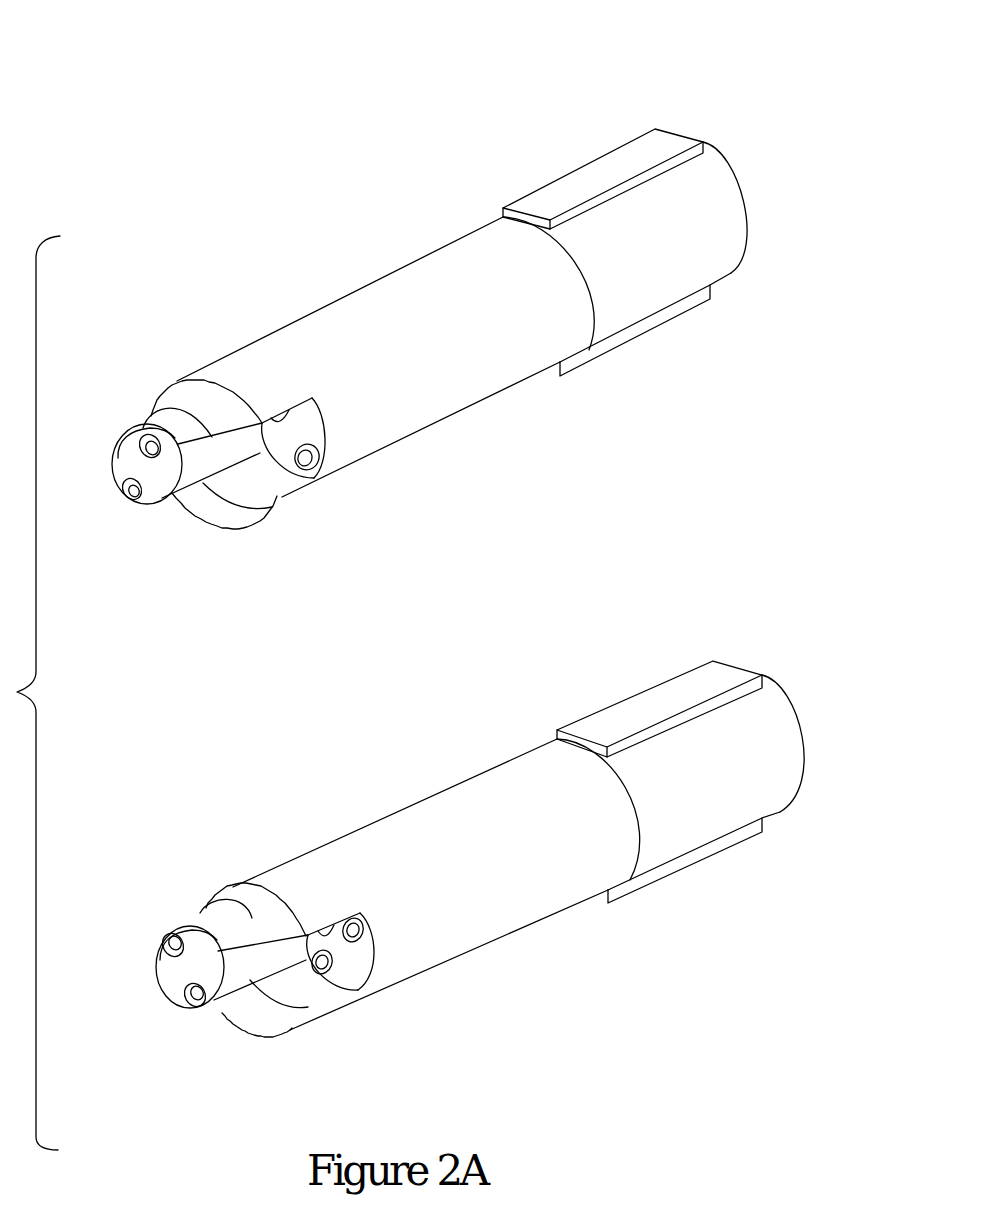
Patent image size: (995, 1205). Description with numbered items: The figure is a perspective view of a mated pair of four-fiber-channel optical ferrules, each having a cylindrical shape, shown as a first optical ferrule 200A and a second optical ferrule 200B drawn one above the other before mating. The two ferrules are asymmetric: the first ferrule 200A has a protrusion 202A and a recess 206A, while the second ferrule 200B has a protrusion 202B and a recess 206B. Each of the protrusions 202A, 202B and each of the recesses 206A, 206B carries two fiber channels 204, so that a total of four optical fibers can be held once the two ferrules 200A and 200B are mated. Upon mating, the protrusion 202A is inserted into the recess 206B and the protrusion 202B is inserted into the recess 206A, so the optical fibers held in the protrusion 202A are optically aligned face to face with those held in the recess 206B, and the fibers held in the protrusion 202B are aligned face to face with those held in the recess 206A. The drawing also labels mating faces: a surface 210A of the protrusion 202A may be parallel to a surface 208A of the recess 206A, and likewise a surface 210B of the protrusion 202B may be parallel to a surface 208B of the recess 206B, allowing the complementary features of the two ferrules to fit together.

The first optical ferrule 200A is at (678, 94).
The second optical ferrule 200B is at (671, 576).
The protrusion 202A is at (192, 484).
The protrusion 202B is at (207, 918).
The fiber channels 204 is at (147, 440).
The recess 206A is at (315, 440).
The recess 206B is at (358, 965).
The surface of the recess 208A is at (197, 393).
The surface of the recess 208B is at (258, 1018).
The surface of the protrusion 210A is at (122, 462).
The surface of the protrusion 210B is at (176, 985).